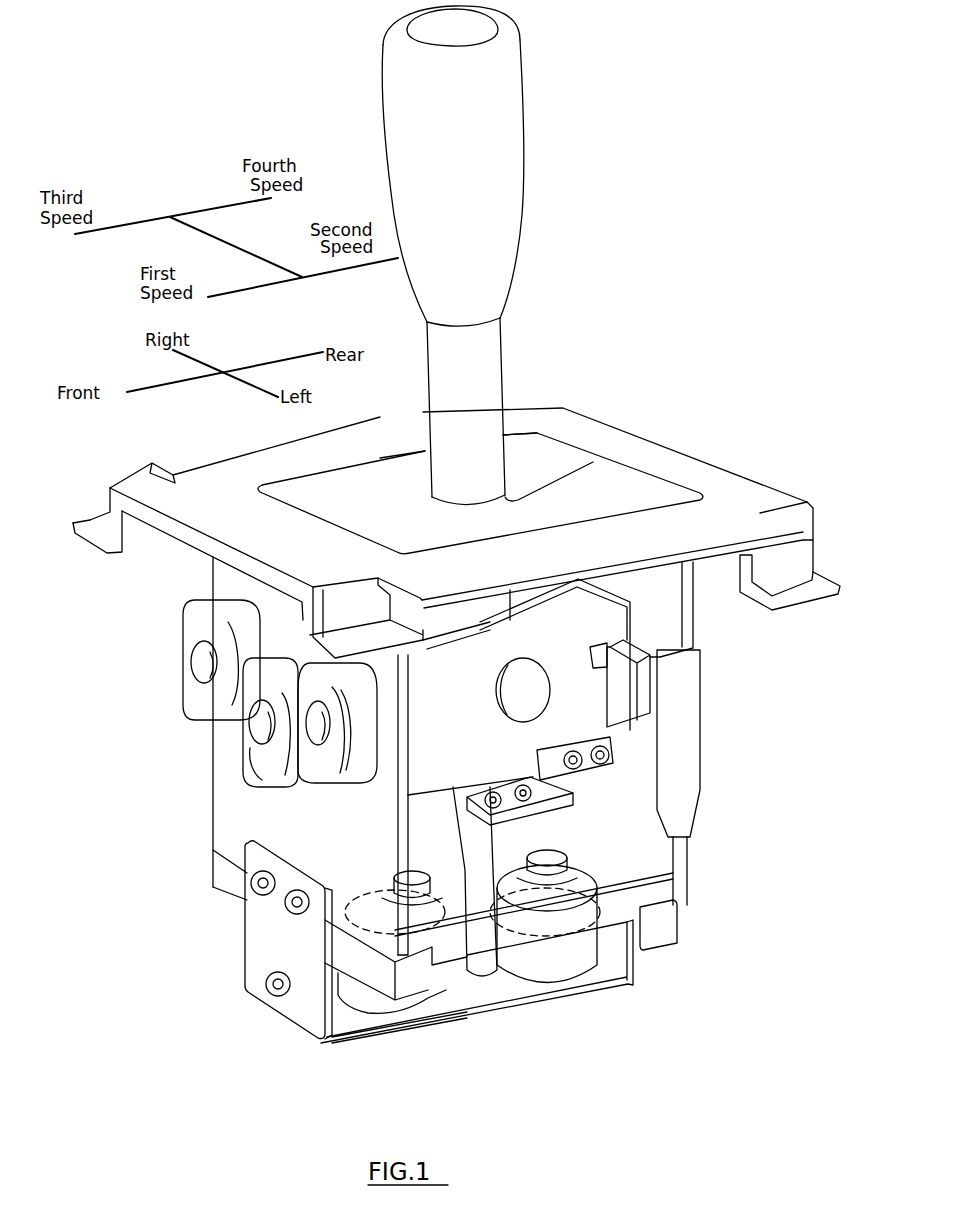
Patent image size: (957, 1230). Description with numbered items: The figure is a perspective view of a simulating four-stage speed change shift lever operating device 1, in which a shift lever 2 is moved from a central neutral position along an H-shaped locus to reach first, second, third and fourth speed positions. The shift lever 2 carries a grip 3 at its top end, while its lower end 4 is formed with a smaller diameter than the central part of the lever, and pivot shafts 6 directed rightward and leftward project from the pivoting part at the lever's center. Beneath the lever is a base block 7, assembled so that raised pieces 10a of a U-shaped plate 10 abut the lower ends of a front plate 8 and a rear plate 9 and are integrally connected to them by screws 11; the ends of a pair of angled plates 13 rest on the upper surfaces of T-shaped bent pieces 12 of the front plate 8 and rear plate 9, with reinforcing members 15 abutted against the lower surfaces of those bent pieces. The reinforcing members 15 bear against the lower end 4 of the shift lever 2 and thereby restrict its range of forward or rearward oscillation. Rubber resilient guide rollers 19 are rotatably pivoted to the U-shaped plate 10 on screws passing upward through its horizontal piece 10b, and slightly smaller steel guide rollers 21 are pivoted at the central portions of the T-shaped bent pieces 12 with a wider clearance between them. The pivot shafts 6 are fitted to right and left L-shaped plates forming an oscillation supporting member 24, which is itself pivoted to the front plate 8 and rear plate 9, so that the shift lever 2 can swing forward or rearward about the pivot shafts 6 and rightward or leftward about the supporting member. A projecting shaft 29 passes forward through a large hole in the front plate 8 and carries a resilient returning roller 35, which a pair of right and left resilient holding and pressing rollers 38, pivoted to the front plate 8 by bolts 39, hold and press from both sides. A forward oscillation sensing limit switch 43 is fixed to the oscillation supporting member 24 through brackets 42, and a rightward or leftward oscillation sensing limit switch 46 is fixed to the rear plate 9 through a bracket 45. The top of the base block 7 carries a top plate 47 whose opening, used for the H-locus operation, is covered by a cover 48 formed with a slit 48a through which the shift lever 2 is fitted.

The simulating four-stage speed change shift lever operating device 1 is at (736, 254).
The shift lever 2 is at (488, 364).
The grip 3 is at (500, 130).
The lower end 4 is at (483, 970).
The pivot shafts 6 is at (533, 690).
The base block 7 is at (837, 483).
The front plate 8 is at (230, 818).
The rear plate 9 is at (673, 611).
The U-shaped plate 10 is at (306, 970).
The raised pieces 10a is at (238, 940).
The horizontal piece 10b is at (343, 1023).
The screws 11 is at (290, 910).
The T-shaped bent pieces 12 is at (612, 872).
The angled plates 13 is at (610, 913).
The reinforcing members 15 is at (663, 937).
The resilient guide rollers 19 is at (428, 1000).
The steel guide rollers 21 is at (452, 990).
The oscillation supporting member 24 is at (437, 765).
The projecting shaft 29 is at (258, 722).
The resilient returning roller 35 is at (250, 762).
The resilient holding and pressing rollers 38 is at (205, 695).
The bolts 39 is at (195, 660).
The brackets 42 is at (557, 773).
The forward oscillation sensing limit switch 43 is at (540, 817).
The bracket 45 is at (678, 710).
The rightward or leftward oscillation sensing limit switch 46 is at (640, 680).
The top plate 47 is at (607, 430).
The cover 48 is at (627, 495).
The slit 48a is at (593, 460).